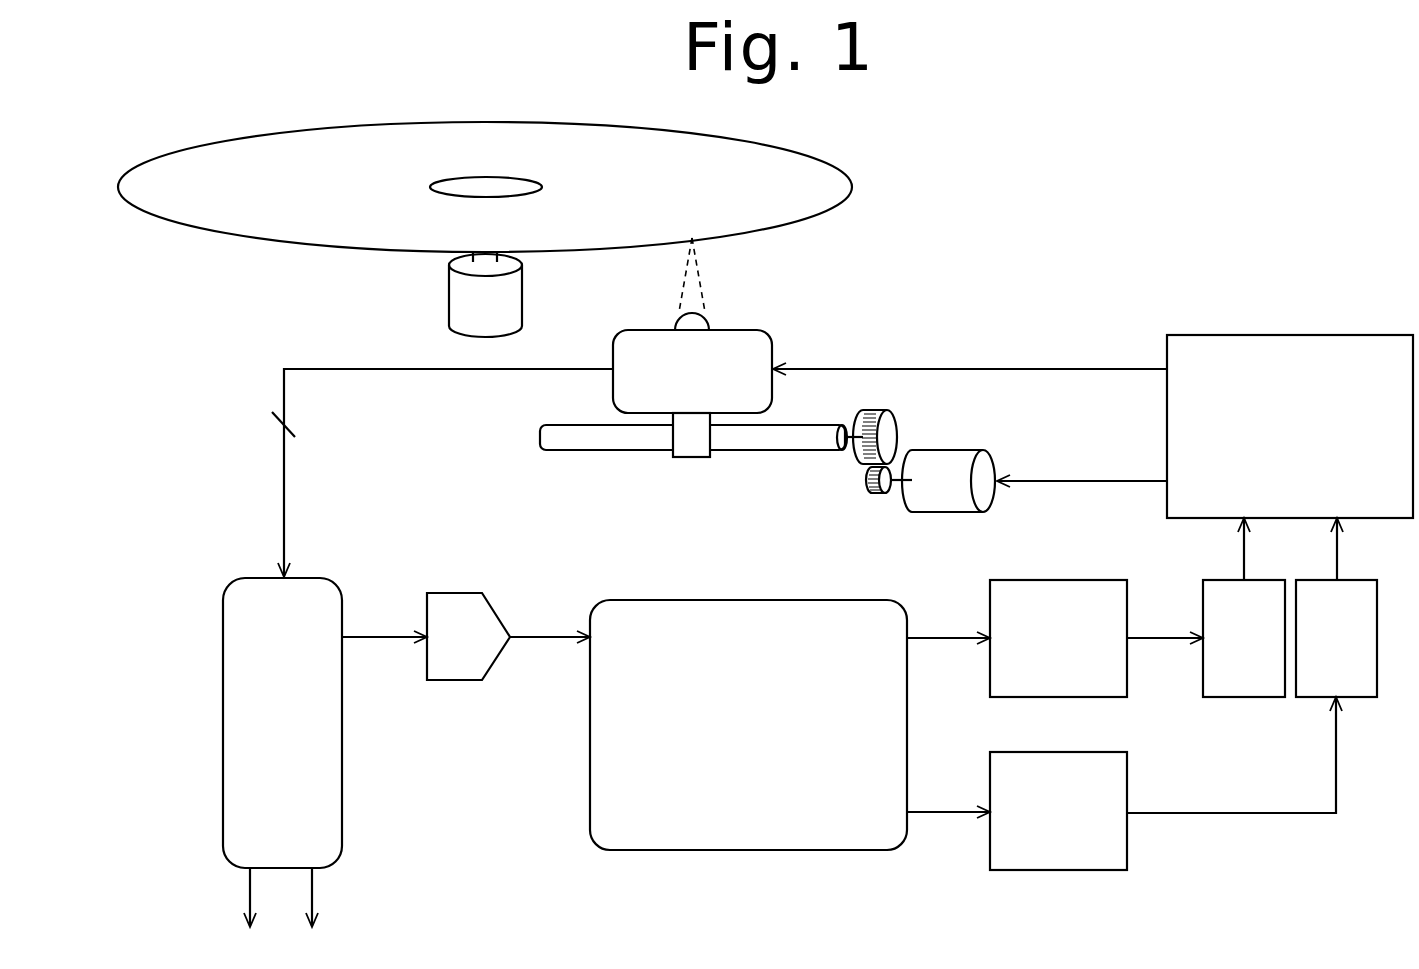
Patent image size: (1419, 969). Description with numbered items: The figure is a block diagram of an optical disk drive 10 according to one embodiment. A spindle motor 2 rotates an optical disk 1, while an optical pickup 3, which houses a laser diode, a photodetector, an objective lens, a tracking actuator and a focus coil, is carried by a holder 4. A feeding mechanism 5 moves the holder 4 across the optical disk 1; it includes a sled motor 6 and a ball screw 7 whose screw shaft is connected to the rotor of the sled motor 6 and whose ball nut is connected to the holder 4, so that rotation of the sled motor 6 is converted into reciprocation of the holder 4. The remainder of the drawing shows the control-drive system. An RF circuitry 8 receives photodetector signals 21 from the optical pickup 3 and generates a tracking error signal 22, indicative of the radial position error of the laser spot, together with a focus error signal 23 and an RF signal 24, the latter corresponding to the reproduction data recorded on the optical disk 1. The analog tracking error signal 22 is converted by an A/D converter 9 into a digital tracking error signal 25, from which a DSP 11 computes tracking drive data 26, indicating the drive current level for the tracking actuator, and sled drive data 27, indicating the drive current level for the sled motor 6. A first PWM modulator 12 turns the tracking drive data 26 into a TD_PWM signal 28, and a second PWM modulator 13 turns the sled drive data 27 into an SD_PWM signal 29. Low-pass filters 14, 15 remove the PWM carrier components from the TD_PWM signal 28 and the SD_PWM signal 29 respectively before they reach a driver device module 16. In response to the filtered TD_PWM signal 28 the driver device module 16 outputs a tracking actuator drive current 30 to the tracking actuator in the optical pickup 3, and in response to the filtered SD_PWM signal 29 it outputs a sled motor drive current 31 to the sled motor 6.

The optical disk 1 is at (216, 155).
The spindle motor 2 is at (449, 292).
The optical pickup 3 is at (703, 320).
The holder 4 is at (760, 355).
The feeding mechanism 5 is at (643, 462).
The sled motor 6 is at (933, 458).
The ball screw 7 is at (745, 453).
The RF circuitry 8 is at (223, 675).
The A/D converter 9 is at (438, 680).
The optical disk drive 10 is at (978, 155).
The DSP 11 is at (797, 600).
The PWM modulator 12 is at (990, 660).
The PWM modulator 13 is at (990, 836).
The low-pass filter 14 is at (1222, 580).
The low-pass filter 15 is at (1357, 700).
The driver device module 16 is at (1275, 333).
The photodetector signals 21 is at (284, 492).
The tracking error signal 22 is at (365, 636).
The focus error signal 23 is at (248, 895).
The RF signal 24 is at (316, 895).
The digital tracking error signal 25 is at (550, 640).
The tracking drive data 26 is at (925, 637).
The sled drive data 27 is at (925, 812).
The TD_PWM signal 28 is at (1175, 645).
The SD_PWM signal 29 is at (1200, 816).
The tracking actuator drive current 30 is at (1060, 368).
The sled motor drive current 31 is at (1060, 480).